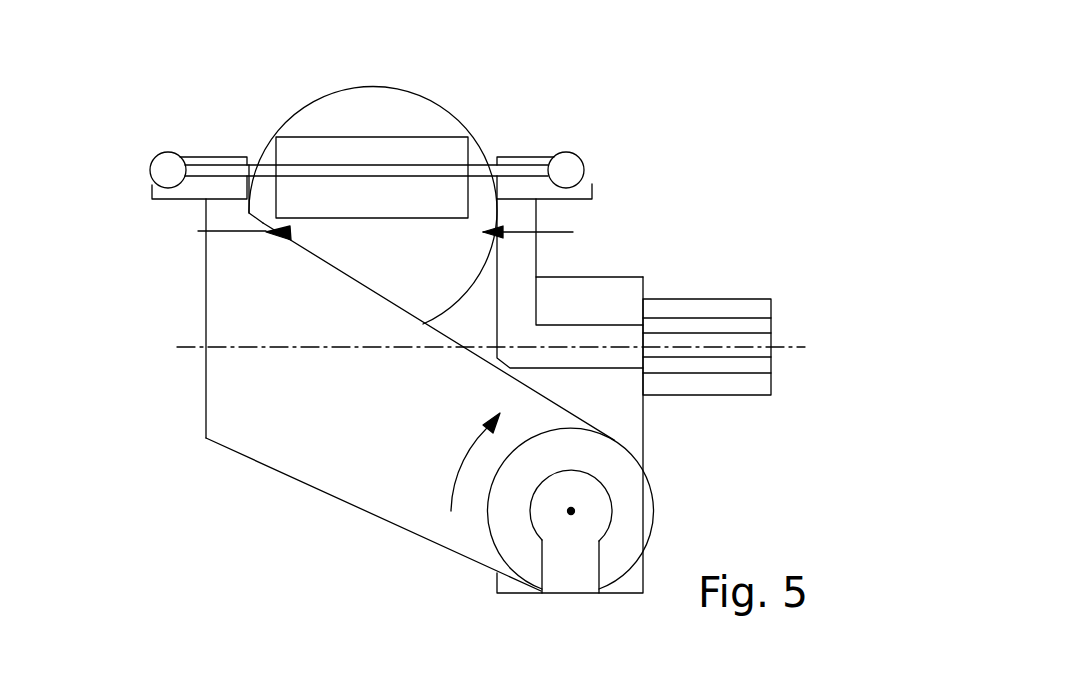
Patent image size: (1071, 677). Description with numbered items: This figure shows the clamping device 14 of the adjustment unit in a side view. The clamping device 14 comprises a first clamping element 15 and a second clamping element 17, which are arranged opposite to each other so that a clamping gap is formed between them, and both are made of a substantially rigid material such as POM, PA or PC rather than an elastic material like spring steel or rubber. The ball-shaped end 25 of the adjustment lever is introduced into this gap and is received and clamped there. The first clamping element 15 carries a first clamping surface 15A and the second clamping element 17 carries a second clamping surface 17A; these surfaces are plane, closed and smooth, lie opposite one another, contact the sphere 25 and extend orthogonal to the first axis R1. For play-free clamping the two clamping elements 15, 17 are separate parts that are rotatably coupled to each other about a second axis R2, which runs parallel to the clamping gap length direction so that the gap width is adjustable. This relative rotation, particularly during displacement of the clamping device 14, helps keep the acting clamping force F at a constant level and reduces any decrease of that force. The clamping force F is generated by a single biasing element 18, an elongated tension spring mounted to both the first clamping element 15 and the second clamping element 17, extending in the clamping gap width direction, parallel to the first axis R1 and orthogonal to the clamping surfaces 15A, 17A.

The clamping device 14 is at (102, 210).
The first clamping element 15 is at (620, 297).
The first clamping surface 15A is at (486, 307).
The second clamping element 17 is at (230, 310).
The second clamping surface 17A is at (255, 163).
The biasing element 18 is at (453, 148).
The ball-shaped end 25 is at (382, 105).
The clamping force F is at (228, 230).
The first axis R1 is at (184, 350).
The second axis R2 is at (571, 511).